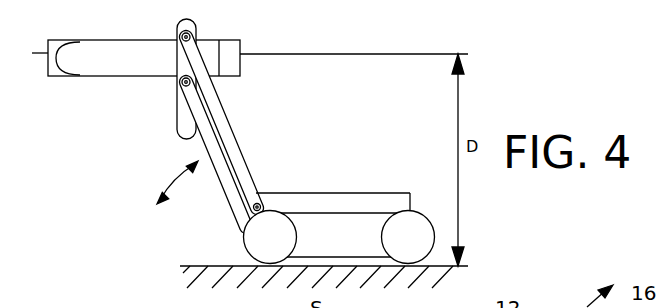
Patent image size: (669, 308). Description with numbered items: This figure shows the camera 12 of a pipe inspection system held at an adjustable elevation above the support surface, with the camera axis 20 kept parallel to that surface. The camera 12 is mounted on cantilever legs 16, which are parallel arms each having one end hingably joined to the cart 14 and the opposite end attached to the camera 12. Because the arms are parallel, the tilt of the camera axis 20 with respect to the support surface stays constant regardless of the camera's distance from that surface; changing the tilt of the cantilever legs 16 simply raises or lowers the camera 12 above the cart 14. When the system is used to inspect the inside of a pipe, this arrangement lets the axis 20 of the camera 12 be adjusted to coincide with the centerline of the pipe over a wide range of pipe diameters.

The camera 12 is at (107, 56).
The cart 14 is at (295, 192).
The cantilever legs 16 is at (235, 135).
The camera axis 20 is at (298, 54).